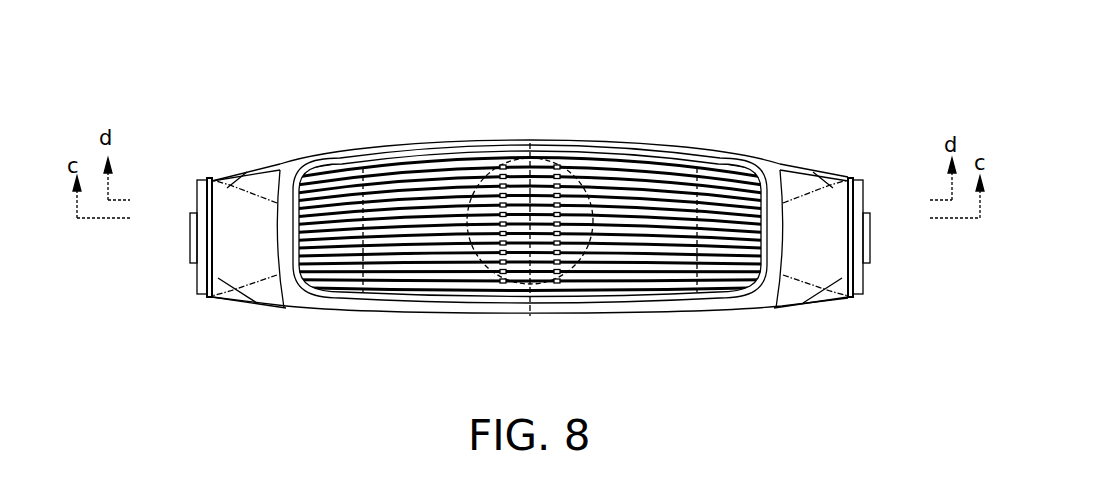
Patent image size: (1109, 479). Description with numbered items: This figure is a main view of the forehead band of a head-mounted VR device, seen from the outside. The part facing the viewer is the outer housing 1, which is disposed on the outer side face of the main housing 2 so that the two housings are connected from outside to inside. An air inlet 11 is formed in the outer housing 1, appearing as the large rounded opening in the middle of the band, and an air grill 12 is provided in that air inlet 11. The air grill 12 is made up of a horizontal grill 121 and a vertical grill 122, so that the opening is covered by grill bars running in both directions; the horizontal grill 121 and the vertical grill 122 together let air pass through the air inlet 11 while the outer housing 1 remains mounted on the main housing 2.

The outer housing 1 is at (385, 148).
The air inlet 11 is at (587, 173).
The main housing 2 is at (763, 190).
The air grill 12 is at (700, 330).
The horizontal grill 121 is at (555, 287).
The vertical grill 122 is at (580, 292).